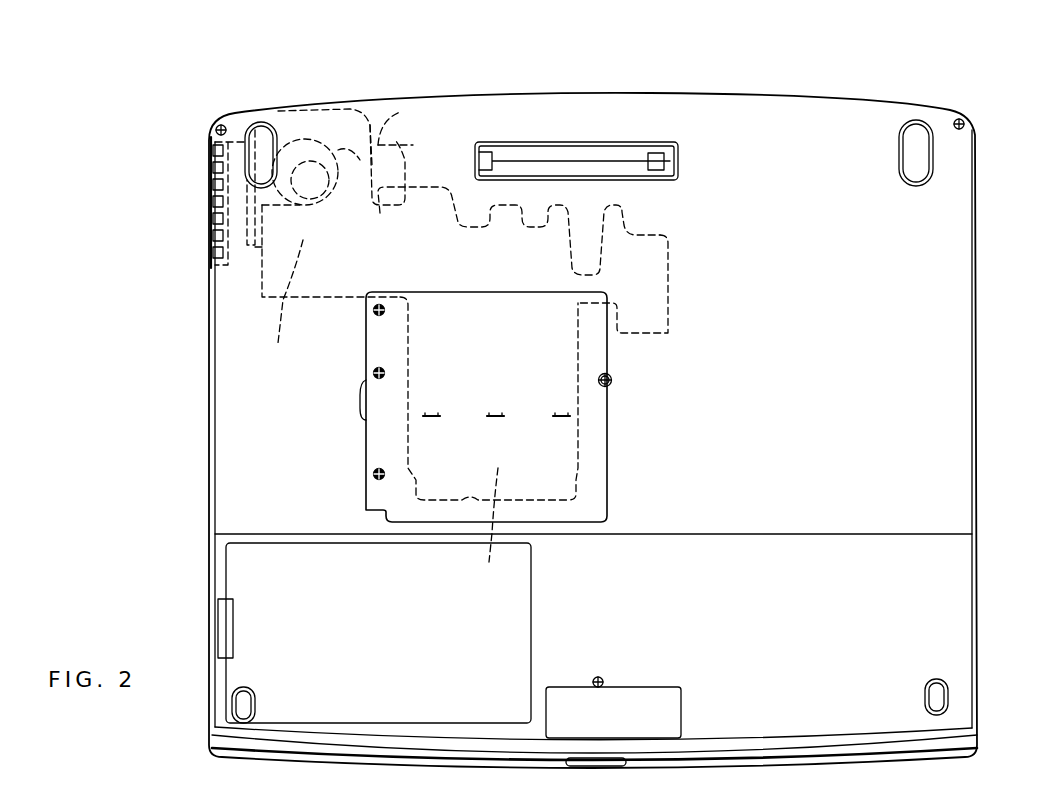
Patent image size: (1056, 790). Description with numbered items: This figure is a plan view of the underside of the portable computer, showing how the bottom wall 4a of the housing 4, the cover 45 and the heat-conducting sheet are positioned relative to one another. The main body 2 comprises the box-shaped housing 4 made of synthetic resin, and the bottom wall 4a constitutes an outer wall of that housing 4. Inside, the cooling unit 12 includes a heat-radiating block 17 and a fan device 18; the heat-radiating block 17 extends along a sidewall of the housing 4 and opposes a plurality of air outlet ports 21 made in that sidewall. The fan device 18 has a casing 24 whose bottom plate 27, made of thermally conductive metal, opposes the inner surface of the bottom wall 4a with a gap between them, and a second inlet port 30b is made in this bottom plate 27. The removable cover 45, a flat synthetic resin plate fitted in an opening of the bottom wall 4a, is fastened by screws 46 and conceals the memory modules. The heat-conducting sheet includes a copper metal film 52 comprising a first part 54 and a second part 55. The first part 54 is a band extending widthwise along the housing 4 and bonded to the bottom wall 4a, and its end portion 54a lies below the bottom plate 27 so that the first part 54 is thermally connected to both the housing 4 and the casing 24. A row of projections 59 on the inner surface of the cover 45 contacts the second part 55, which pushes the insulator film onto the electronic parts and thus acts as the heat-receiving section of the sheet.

The main body 2 is at (830, 95).
The housing 4 is at (962, 462).
The bottom wall 4a is at (938, 340).
The cooling unit 12 is at (298, 105).
The heat-radiating block 17 is at (246, 248).
The fan device 18 is at (372, 140).
The air outlet ports 21 is at (212, 235).
The casing 24 is at (321, 130).
The bottom plate 27 is at (401, 130).
The second inlet port 30b is at (352, 140).
The cover 45 is at (607, 484).
The screws 46 is at (372, 311).
The metal film 52 is at (660, 282).
The first part 54 is at (425, 212).
The end portion 54a is at (279, 306).
The second part 55 is at (487, 528).
The projections 59 is at (558, 413).